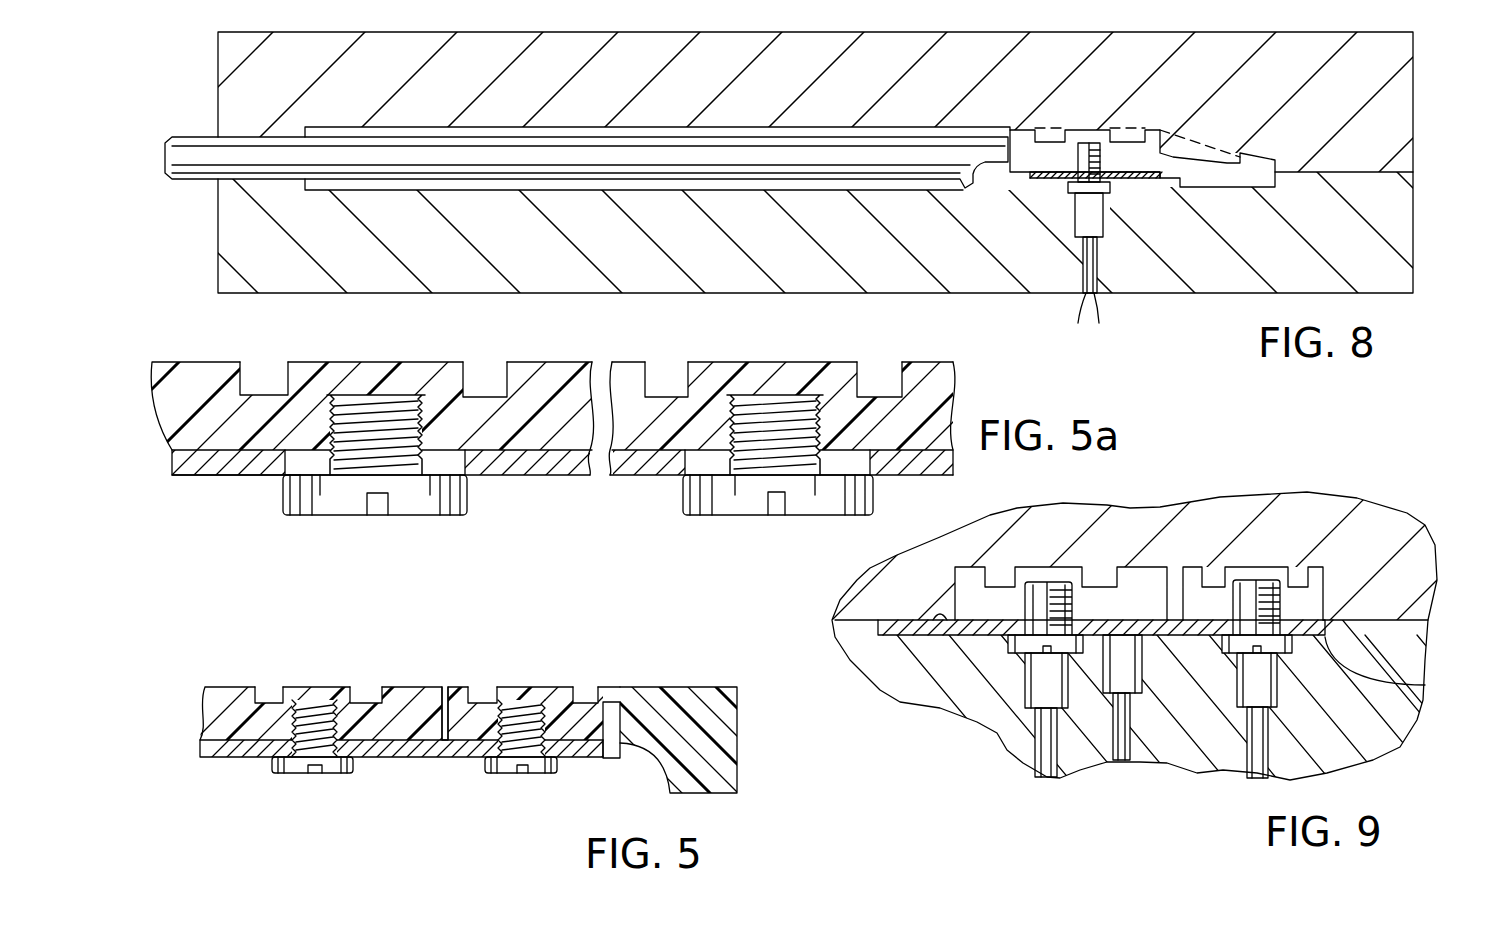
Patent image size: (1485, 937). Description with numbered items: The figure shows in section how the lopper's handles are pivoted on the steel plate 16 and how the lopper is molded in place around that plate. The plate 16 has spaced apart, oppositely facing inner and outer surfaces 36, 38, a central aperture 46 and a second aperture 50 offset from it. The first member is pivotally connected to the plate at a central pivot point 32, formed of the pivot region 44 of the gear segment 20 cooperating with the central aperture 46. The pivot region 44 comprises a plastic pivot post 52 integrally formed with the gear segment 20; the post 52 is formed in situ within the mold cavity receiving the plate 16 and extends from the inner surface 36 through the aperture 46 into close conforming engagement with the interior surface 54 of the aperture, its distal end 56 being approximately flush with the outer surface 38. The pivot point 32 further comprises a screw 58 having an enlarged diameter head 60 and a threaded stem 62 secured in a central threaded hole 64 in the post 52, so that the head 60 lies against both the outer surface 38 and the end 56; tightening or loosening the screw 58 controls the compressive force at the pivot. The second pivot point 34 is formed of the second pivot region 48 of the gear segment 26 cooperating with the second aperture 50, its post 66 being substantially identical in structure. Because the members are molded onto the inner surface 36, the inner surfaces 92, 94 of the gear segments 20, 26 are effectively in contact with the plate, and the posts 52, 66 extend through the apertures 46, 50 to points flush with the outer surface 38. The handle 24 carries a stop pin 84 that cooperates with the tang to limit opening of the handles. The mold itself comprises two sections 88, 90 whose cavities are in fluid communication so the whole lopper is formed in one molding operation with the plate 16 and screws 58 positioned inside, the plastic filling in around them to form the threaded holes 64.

In FIG. 8, the plate 16 is at (1150, 180).
In FIG. 5A, the plate 16 is at (235, 470).
In FIG. 9, the plate 16 is at (890, 640).
In FIG. 5A, the gear segment 20 is at (163, 372).
In FIG. 5, the handle 24 is at (722, 773).
In FIG. 5A, the gear segment 26 is at (930, 395).
In FIG. 5A, the central pivot point 32 is at (284, 528).
In FIG. 5, the central pivot point 32 is at (298, 788).
In FIG. 5, the second pivot point 34 is at (518, 789).
In FIG. 5A, the inner surface 36 is at (615, 470).
In FIG. 9, the inner surface 36 is at (943, 636).
In FIG. 5A, the outer surface 38 is at (180, 478).
In FIG. 9, the outer surface 38 is at (1405, 688).
In FIG. 5A, the pivot region 44 is at (298, 372).
In FIG. 5, the pivot region 44 is at (290, 690).
In FIG. 5A, the central aperture 46 is at (470, 500).
In FIG. 5A, the second pivot region 48 is at (765, 378).
In FIG. 5, the second pivot region 48 is at (527, 690).
In FIG. 5A, the second aperture 50 is at (838, 487).
In FIG. 5A, the pivot post 52 is at (445, 455).
In FIG. 5A, the interior surface 54 is at (310, 472).
In FIG. 5A, the distal end 56 is at (320, 478).
In FIG. 5, the screw 58 is at (336, 772).
In FIG. 9, the screw 58 is at (1028, 662).
In FIG. 5A, the head 60 is at (435, 500).
In FIG. 5A, the threaded stem 62 is at (400, 410).
In FIG. 5A, the threaded hole 64 is at (352, 410).
In FIG. 5A, the post 66 is at (848, 440).
In FIG. 5, the pin 84 is at (606, 770).
In FIG. 8, the mold section 88 is at (1385, 270).
In FIG. 8, the mold section 90 is at (1395, 122).
In FIG. 5, the inner surface 92 is at (404, 732).
In FIG. 5, the inner surface 94 is at (606, 705).